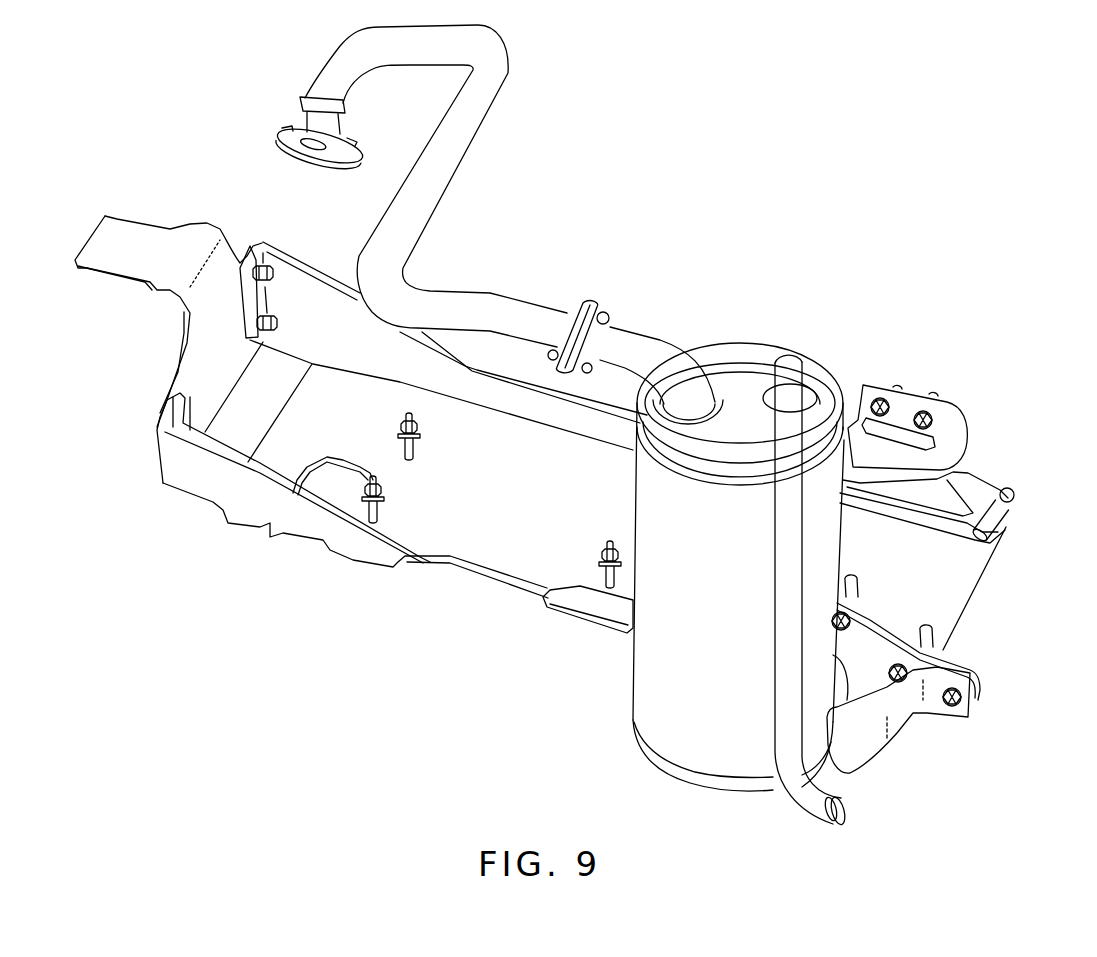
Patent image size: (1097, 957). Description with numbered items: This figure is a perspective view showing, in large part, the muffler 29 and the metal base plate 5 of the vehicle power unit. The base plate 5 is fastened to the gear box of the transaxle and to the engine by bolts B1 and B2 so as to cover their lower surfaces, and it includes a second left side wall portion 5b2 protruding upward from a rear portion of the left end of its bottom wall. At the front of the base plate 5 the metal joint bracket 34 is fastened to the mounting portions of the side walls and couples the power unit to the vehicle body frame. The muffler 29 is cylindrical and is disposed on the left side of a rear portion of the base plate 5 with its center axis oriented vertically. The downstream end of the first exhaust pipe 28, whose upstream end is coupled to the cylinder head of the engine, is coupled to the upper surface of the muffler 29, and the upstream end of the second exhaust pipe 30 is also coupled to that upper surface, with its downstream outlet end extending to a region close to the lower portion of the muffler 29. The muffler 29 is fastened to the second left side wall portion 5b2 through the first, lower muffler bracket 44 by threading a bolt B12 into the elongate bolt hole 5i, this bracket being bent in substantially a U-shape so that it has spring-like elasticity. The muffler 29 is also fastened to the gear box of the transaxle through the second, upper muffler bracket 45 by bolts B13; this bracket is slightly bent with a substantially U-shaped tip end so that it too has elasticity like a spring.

The base plate 5 is at (447, 557).
The second left side wall portion 5b2 is at (580, 613).
The elongate bolt hole 5i is at (977, 680).
The first exhaust pipe 28 is at (500, 97).
The muffler 29 is at (633, 687).
The second exhaust pipe 30 is at (793, 803).
The joint bracket 34 is at (187, 337).
The first muffler bracket 44 is at (900, 730).
The second muffler bracket 45 is at (943, 423).
The bolt B1 is at (370, 503).
The bolt B2 is at (993, 523).
The bolt B12 is at (963, 700).
The bolts B13 is at (883, 407).